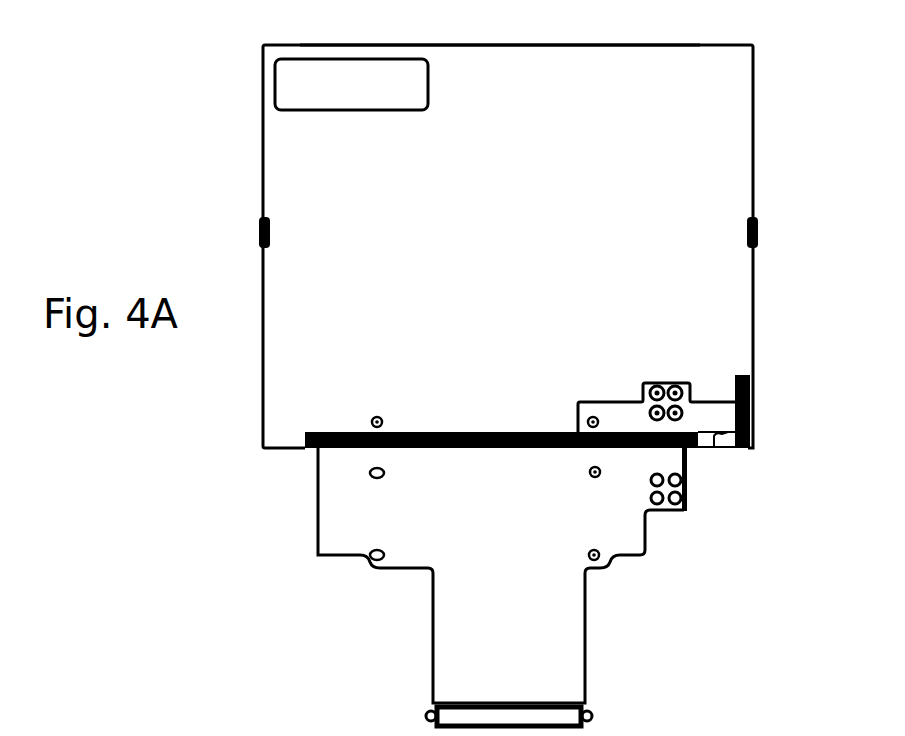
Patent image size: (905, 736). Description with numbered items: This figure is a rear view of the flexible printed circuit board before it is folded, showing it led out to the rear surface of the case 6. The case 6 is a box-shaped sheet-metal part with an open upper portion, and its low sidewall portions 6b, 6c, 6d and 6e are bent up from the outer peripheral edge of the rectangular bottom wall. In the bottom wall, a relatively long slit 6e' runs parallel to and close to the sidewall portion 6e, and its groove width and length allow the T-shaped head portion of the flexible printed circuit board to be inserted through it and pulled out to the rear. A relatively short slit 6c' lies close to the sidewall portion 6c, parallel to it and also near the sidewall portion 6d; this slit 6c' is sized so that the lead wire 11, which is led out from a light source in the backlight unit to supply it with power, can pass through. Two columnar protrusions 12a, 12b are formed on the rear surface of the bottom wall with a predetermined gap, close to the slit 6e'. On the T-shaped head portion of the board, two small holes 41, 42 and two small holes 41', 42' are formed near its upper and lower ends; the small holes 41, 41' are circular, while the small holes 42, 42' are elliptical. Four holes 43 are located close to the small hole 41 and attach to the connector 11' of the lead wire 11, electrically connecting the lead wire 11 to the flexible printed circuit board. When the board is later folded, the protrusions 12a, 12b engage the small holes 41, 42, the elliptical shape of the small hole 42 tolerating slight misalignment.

The case 6 is at (725, 157).
The sidewall portion 6b is at (263, 172).
The sidewall portion 6c is at (789, 261).
The slit 6c' is at (766, 411).
The sidewall portion 6d is at (600, 45).
The sidewall portion 6e is at (731, 500).
The slit 6e' is at (459, 466).
The lead wire 11 is at (727, 459).
The connector 11' is at (691, 389).
The columnar protrusion 12a is at (377, 416).
The columnar protrusion 12b is at (593, 416).
The small hole 41 is at (638, 521).
The small hole 41' is at (620, 582).
The small hole 42 is at (331, 488).
The small hole 42' is at (343, 575).
The holes 43 is at (682, 515).